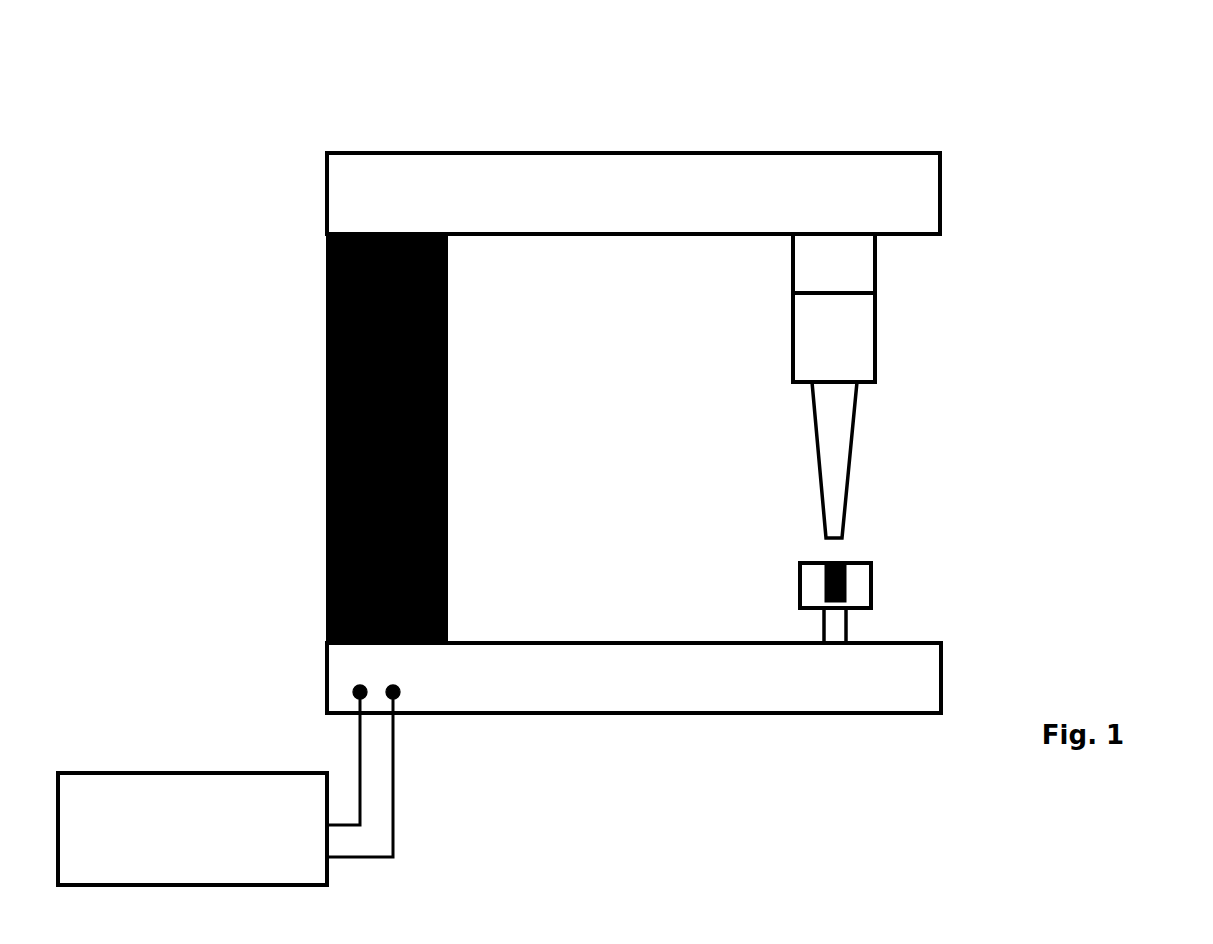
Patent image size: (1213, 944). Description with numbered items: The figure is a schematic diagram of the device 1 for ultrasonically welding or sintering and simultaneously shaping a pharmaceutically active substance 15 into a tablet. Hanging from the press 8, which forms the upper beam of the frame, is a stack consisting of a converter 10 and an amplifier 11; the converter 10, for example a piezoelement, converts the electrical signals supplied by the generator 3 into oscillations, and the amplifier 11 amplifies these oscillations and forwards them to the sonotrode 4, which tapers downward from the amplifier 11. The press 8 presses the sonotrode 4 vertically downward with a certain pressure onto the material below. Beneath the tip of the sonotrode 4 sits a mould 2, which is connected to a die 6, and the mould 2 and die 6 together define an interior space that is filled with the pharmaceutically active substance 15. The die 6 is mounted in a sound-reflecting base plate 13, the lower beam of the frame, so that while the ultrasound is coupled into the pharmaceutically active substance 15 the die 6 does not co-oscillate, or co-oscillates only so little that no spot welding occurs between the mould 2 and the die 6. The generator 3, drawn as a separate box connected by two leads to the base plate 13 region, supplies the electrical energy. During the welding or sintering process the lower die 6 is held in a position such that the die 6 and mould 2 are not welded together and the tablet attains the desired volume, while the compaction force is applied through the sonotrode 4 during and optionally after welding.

The device 1 is at (950, 97).
The mould 2 is at (860, 589).
The generator 3 is at (207, 808).
The sonotrode 4 is at (835, 452).
The die 6 is at (837, 624).
The press 8 is at (908, 208).
The converter 10 is at (813, 265).
The amplifier 11 is at (858, 335).
The sound-reflecting base plate 13 is at (800, 693).
The pharmaceutically active substance 15 is at (820, 563).